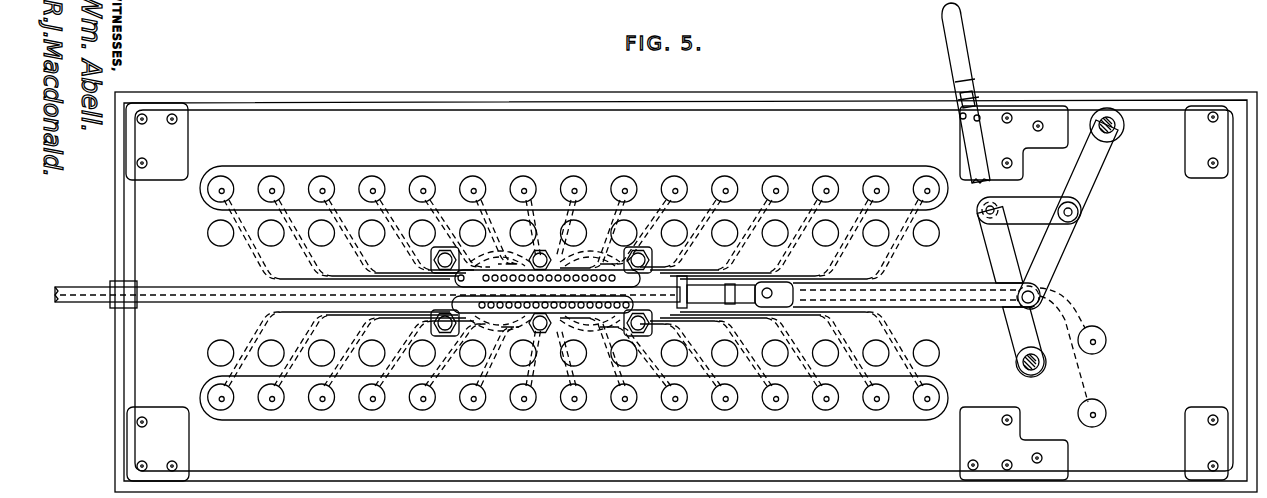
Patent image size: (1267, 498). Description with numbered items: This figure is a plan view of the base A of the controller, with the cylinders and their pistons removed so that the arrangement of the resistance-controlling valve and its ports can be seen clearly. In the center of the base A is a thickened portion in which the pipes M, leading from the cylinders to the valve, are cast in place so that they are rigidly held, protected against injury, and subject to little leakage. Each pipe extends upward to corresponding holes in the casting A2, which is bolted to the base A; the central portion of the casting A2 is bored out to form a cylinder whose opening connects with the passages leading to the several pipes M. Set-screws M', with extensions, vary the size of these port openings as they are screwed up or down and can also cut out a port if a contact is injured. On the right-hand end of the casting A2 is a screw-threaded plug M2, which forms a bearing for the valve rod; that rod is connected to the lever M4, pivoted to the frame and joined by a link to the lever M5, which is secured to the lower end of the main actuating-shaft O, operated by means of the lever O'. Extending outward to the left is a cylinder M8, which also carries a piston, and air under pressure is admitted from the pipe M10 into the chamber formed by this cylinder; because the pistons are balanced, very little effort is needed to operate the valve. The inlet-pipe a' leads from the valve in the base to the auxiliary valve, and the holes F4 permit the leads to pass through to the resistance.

The base A is at (684, 290).
The inlet-pipe a' is at (796, 306).
The casting A2 is at (432, 260).
The pipes M is at (476, 317).
The set-screws M' is at (897, 276).
The screw-threaded plug M2 is at (692, 276).
The lever M4 is at (1062, 243).
The lever M5 is at (993, 250).
The cylinder M8 is at (182, 303).
The pipe M10 is at (87, 289).
The holes F4 is at (223, 350).
The main actuating-shaft O is at (1037, 378).
The lever O' is at (977, 93).